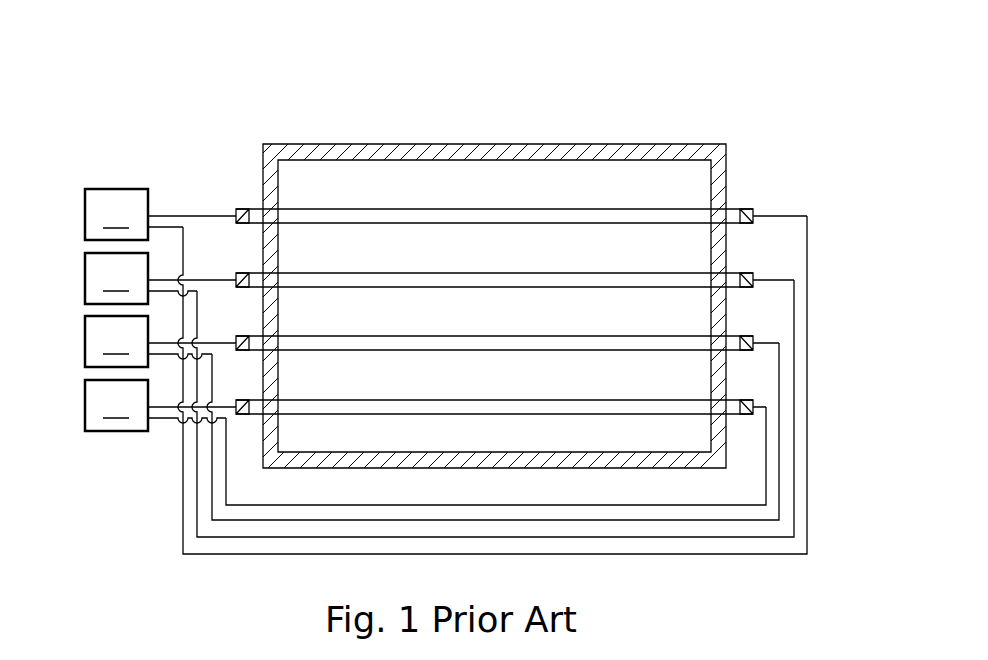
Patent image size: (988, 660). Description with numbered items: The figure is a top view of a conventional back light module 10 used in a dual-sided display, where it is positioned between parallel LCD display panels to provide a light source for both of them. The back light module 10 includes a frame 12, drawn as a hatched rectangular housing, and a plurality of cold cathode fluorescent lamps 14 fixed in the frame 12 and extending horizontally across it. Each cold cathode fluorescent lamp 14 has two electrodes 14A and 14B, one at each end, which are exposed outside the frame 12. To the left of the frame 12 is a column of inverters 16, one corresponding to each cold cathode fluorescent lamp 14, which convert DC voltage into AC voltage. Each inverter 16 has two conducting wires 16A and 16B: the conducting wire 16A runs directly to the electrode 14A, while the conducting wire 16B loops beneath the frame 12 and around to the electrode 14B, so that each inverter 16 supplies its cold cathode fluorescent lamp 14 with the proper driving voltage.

The back light module 10 is at (848, 88).
The frame 12 is at (295, 143).
The cold cathode fluorescent lamp 14 is at (465, 208).
The electrode 14A is at (240, 209).
The electrode 14B is at (750, 208).
The inverter 16 is at (116, 310).
The conducting wire 16A is at (175, 213).
The conducting wire 16B is at (183, 246).